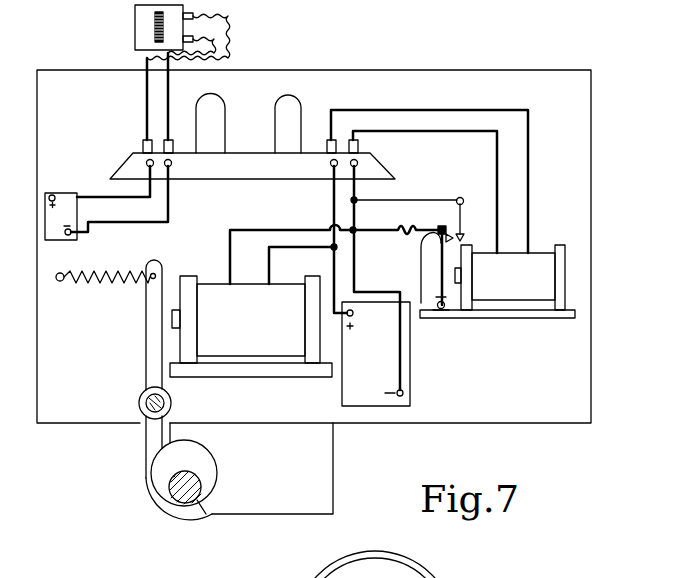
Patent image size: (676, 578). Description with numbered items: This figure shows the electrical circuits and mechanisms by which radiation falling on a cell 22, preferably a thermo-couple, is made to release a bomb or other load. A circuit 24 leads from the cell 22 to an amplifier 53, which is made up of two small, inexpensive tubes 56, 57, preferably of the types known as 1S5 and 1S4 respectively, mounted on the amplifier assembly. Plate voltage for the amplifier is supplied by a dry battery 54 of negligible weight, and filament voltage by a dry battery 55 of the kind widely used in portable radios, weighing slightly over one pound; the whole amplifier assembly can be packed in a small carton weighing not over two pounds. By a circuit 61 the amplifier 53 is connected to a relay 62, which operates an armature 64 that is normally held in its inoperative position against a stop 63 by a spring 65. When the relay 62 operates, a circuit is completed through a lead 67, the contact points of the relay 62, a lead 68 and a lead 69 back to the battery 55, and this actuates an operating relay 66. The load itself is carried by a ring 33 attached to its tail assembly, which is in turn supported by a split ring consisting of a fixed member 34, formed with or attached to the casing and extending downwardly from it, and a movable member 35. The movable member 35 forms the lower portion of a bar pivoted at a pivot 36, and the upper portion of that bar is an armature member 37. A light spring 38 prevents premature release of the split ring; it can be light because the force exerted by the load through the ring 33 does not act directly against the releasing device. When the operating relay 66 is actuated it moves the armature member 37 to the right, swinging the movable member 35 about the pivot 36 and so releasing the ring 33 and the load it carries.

The cell 22 is at (135, 28).
The circuit 24 is at (212, 45).
The ring 33 is at (201, 487).
The fixed member 34 is at (209, 473).
The movable member 35 is at (148, 484).
The pivot 36 is at (147, 401).
The armature member 37 is at (153, 328).
The spring 38 is at (93, 283).
The amplifier 53 is at (239, 182).
The dry battery 54 is at (72, 240).
The dry battery 55 is at (411, 355).
The tube 56 is at (210, 124).
The tube 57 is at (288, 124).
The circuit 61 is at (456, 128).
The relay 62 is at (497, 281).
The stop 63 is at (421, 250).
The armature 64 is at (440, 275).
The spring 65 is at (432, 310).
The operating relay 66 is at (251, 326).
The lead 67 is at (420, 183).
The lead 68 is at (228, 254).
The lead 69 is at (270, 267).